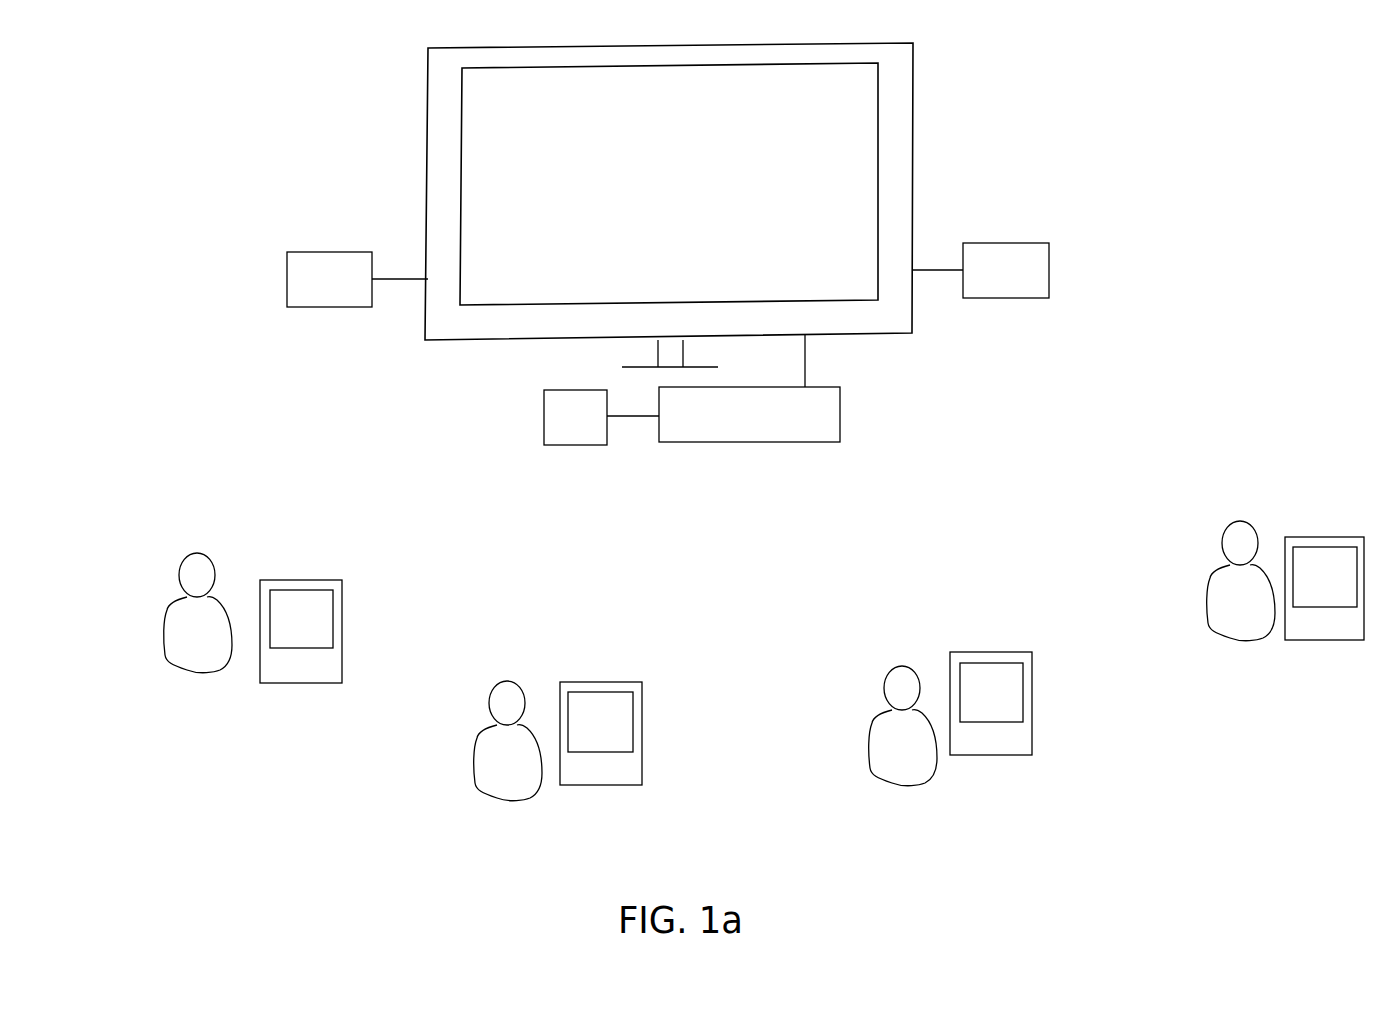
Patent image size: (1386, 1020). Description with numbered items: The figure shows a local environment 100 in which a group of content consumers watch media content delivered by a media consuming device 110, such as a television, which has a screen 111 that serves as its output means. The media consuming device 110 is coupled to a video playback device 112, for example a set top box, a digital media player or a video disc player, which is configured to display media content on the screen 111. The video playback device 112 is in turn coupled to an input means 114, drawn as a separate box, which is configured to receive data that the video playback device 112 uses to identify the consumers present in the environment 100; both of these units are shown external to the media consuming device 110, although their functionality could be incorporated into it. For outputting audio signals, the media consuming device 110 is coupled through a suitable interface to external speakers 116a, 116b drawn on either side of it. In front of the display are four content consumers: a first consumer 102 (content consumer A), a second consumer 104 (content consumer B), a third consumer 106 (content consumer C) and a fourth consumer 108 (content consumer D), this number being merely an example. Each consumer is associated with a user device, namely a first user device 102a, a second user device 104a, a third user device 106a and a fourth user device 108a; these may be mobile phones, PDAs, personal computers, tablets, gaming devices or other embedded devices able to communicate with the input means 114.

The local environment 100 is at (165, 168).
The media consuming device 110 is at (912, 207).
The screen 111 is at (848, 63).
The video playback device 112 is at (840, 410).
The input means 114 is at (542, 425).
The speaker 116a is at (317, 252).
The speaker 116b is at (1007, 243).
The first consumer 102 is at (197, 553).
The first user device 102a is at (293, 580).
The second consumer 104 is at (507, 681).
The second user device 104a is at (605, 682).
The third consumer 106 is at (902, 666).
The third user device 106a is at (990, 652).
The fourth consumer 108 is at (1240, 521).
The fourth user device 108a is at (1323, 537).